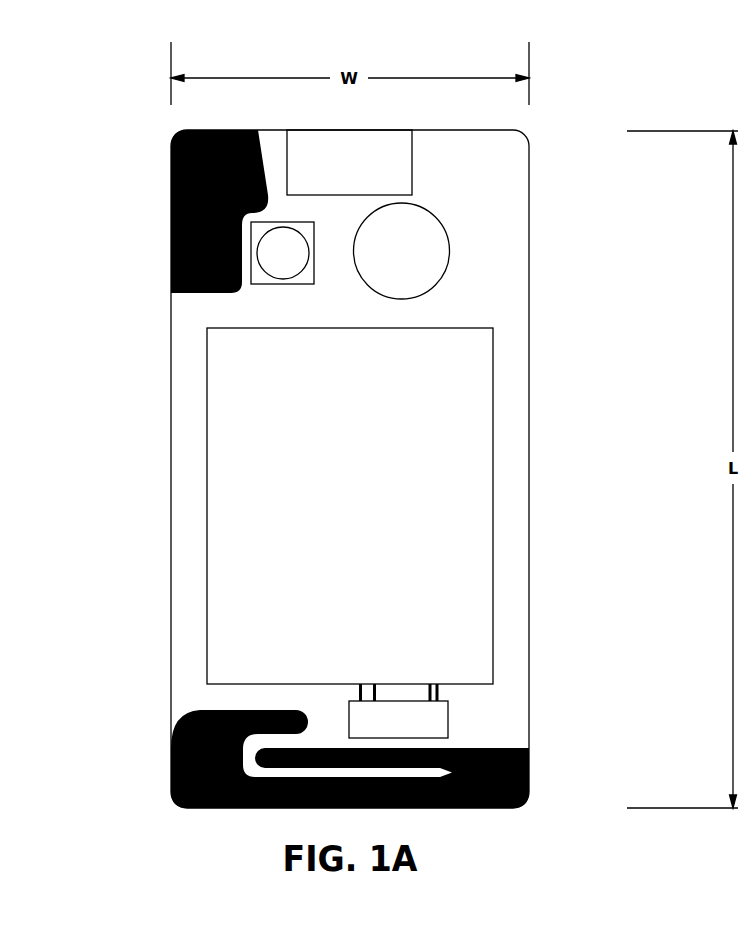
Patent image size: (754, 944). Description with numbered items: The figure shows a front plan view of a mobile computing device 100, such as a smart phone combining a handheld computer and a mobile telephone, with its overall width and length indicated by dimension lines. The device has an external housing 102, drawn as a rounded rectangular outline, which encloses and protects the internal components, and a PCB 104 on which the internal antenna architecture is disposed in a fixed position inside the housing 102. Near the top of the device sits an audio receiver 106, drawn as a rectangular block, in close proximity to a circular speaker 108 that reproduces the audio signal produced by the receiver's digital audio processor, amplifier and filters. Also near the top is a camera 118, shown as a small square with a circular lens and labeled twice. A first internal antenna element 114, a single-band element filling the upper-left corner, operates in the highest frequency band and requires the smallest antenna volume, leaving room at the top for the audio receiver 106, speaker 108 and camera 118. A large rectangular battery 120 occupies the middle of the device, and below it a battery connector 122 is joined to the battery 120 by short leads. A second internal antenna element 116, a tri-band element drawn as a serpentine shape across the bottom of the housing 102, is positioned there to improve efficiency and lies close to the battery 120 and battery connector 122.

The mobile computing device 100 is at (560, 128).
The external housing 102 is at (171, 461).
The PCB 104 is at (497, 157).
The audio receiver 106 is at (319, 149).
The speaker 108 is at (450, 250).
The first internal antenna element 114 is at (170, 225).
The second internal antenna element 116 is at (301, 755).
The camera 118 is at (412, 171).
The battery 120 is at (493, 522).
The battery connector 122 is at (448, 728).